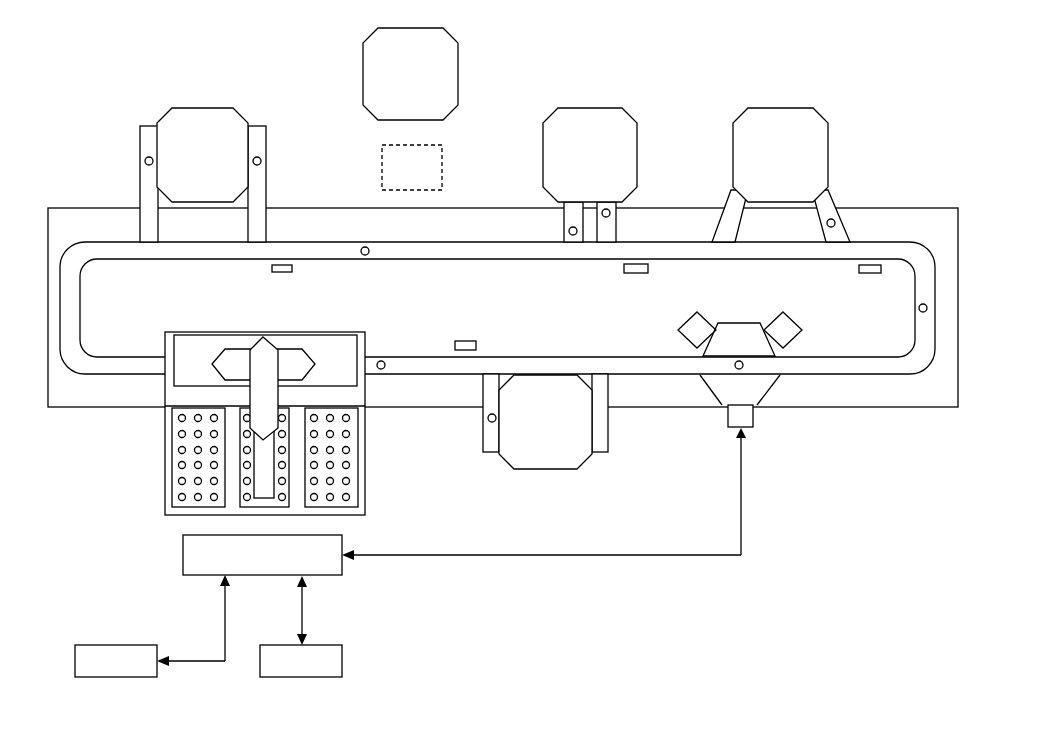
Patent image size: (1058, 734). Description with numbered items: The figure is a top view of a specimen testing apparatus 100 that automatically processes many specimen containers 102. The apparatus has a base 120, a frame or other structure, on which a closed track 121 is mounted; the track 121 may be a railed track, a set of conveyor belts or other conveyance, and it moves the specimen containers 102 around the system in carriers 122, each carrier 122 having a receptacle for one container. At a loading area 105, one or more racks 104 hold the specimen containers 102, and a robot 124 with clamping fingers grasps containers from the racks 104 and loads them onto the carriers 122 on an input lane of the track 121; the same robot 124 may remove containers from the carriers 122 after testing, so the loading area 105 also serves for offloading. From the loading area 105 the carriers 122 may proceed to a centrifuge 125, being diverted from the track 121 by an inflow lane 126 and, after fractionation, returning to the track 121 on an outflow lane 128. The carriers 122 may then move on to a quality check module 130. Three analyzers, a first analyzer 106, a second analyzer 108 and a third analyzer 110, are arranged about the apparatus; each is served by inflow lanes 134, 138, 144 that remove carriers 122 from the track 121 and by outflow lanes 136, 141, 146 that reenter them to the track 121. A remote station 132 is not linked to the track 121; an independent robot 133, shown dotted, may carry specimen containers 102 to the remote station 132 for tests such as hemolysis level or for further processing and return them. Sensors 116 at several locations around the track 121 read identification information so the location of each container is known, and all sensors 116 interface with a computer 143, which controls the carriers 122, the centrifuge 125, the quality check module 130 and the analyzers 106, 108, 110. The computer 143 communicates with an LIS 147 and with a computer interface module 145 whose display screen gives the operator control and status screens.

The specimen testing apparatus 100 is at (165, 64).
The specimen container 102 is at (261, 533).
The rack 104 is at (238, 462).
The loading area 105 is at (158, 487).
The first analyzer 106 is at (766, 164).
The second analyzer 108 is at (576, 164).
The third analyzer 110 is at (189, 166).
The sensor 116 is at (292, 268).
The base 120 is at (86, 208).
The track 121 is at (82, 303).
The carrier 122 is at (369, 254).
The robot 124 is at (200, 368).
The centrifuge 125 is at (531, 435).
The inflow lane 126 is at (483, 446).
The outflow lane 128 is at (608, 446).
The quality check module 130 is at (697, 396).
The remote station 132 is at (396, 84).
The independent robot 133 is at (443, 162).
The inflow lane 134 is at (834, 201).
The outflow lane 136 is at (731, 202).
The inflow lane 138 is at (616, 208).
The outflow lane 141 is at (564, 208).
The computer 143 is at (183, 549).
The inflow lane 144 is at (267, 171).
The computer interface module 145 is at (343, 662).
The outflow lane 146 is at (140, 176).
The LIS 147 is at (117, 678).